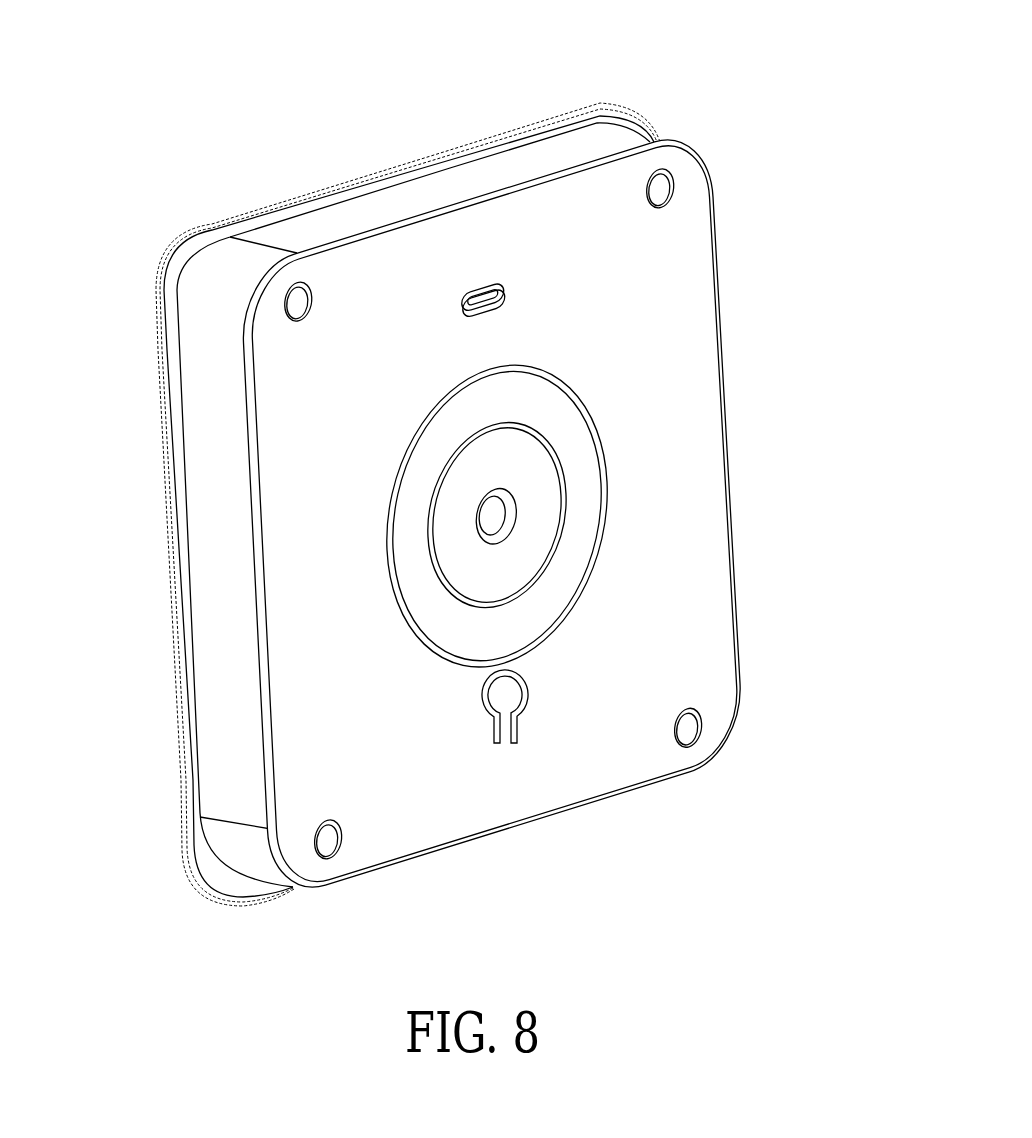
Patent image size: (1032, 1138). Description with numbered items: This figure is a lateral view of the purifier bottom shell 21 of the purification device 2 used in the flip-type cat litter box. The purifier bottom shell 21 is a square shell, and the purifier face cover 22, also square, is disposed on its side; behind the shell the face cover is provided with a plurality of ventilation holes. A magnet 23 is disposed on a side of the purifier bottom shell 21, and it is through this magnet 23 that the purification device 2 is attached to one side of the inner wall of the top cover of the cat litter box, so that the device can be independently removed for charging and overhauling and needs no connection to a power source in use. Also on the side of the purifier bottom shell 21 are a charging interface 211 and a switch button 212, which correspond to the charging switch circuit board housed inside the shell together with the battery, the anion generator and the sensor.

The purification device 2 is at (729, 343).
The purifier bottom shell 21 is at (695, 567).
The purifier face cover 22 is at (170, 516).
The magnet 23 is at (568, 579).
The charging interface 211 is at (486, 280).
The switch button 212 is at (503, 704).